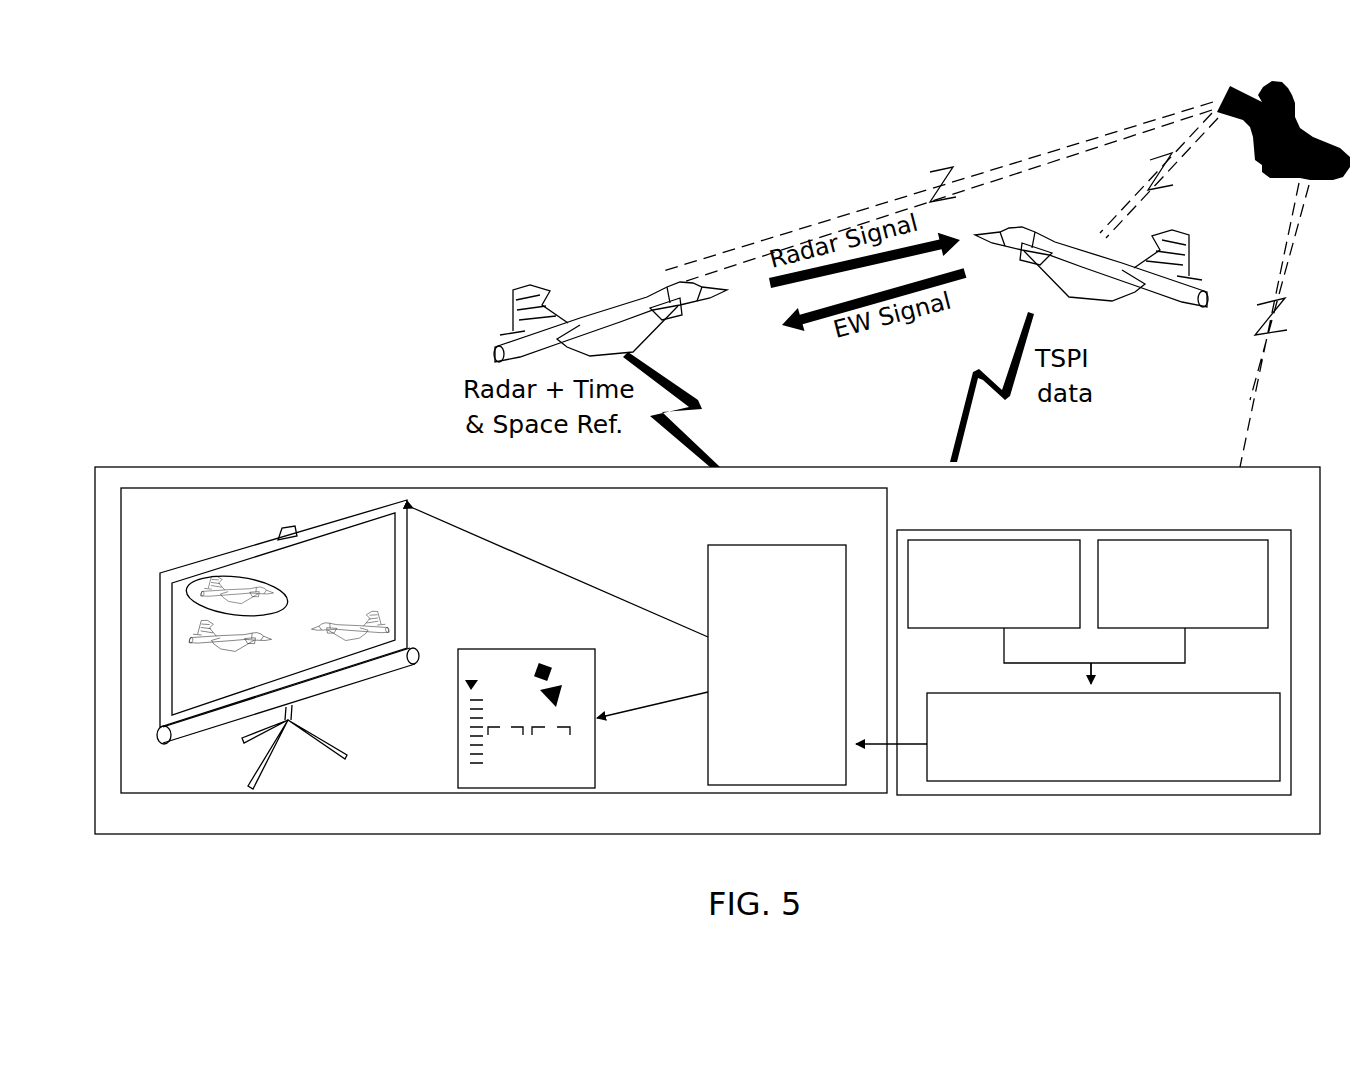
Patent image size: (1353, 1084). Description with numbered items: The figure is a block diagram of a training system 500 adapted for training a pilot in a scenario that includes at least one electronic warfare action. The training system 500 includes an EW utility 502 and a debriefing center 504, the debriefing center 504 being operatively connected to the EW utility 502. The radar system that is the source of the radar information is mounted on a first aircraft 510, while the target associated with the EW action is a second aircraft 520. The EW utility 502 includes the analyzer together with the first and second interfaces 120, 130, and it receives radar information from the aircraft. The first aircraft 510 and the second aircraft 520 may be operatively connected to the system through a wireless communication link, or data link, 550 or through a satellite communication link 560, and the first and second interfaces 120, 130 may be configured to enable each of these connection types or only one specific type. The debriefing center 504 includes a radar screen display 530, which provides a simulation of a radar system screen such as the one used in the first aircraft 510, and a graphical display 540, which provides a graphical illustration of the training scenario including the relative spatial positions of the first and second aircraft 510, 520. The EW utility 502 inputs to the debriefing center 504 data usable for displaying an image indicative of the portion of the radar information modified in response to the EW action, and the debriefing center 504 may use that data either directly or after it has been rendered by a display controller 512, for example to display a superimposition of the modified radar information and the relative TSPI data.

The training system 500 is at (297, 410).
The first aircraft 510 is at (650, 290).
The second aircraft 520 is at (1183, 235).
The radar screen display 530 is at (498, 660).
The graphical display 540 is at (268, 548).
The wireless communication link (data link) 550 is at (905, 435).
The satellite communication link 560 is at (1073, 142).
The EW utility 502 is at (1203, 770).
The debriefing center 504 is at (407, 777).
The display controller 512 is at (722, 737).
The first interface 120 is at (942, 622).
The second interface 130 is at (1217, 622).